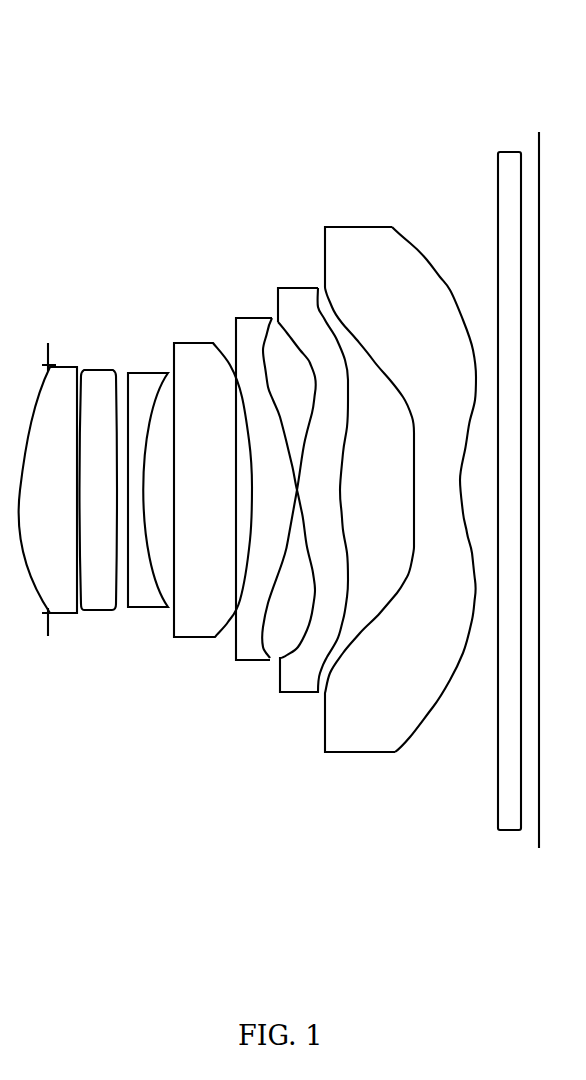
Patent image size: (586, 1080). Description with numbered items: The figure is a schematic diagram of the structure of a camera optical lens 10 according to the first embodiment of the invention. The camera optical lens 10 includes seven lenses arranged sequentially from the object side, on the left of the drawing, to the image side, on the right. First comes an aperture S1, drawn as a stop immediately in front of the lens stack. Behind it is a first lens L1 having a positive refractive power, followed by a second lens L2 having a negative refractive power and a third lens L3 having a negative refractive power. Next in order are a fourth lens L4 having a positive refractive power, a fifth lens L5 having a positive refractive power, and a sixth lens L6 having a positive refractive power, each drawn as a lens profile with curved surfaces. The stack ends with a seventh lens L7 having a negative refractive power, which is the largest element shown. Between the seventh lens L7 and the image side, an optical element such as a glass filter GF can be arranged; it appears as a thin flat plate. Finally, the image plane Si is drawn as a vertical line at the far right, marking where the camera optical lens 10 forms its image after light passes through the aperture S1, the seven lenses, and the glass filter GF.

The camera optical lens 10 is at (298, 50).
The aperture S1 is at (48, 479).
The first lens L1 is at (48, 481).
The second lens L2 is at (99, 480).
The third lens L3 is at (148, 481).
The fourth lens L4 is at (213, 481).
The fifth lens L5 is at (275, 478).
The sixth lens L6 is at (305, 481).
The seventh lens L7 is at (400, 478).
The glass filter GF is at (509, 481).
The image plane Si is at (539, 480).